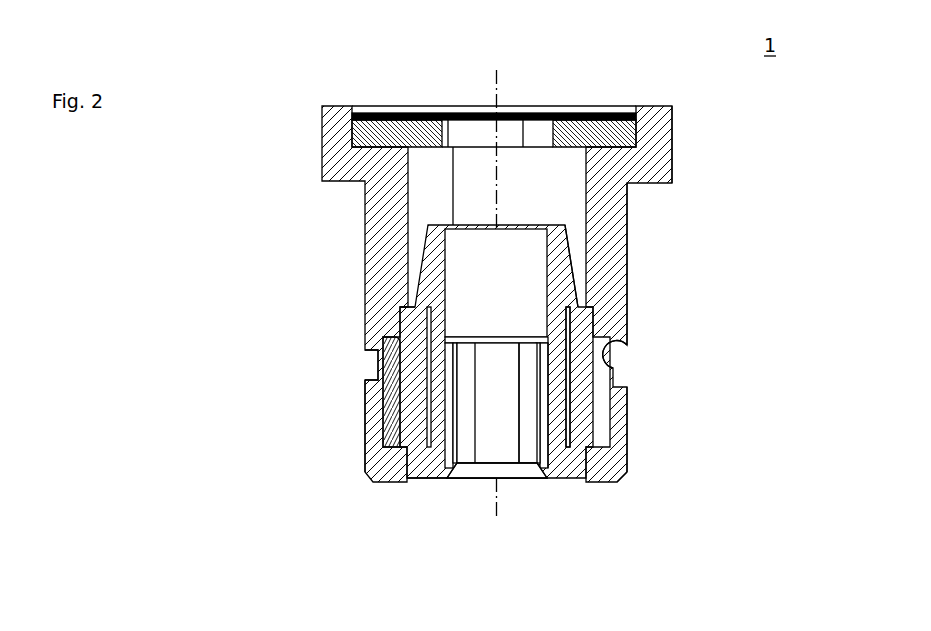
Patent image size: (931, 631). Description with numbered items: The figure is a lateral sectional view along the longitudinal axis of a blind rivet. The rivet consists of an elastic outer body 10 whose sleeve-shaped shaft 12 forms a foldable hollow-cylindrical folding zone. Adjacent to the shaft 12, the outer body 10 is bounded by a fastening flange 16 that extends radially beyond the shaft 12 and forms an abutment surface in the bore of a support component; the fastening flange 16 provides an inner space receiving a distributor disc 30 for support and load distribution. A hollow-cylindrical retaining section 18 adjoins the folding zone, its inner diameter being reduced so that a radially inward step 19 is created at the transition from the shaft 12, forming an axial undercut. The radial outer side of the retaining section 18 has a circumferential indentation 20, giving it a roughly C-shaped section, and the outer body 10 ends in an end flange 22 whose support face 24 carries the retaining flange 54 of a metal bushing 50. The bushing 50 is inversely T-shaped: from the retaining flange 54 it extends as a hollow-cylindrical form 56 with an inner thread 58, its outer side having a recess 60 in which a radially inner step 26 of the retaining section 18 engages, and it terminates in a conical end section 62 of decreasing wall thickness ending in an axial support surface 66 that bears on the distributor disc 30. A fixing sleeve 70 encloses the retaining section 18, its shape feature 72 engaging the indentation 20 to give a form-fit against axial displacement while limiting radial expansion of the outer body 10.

The outer body 10 is at (613, 308).
The sleeve-shaped shaft 12 is at (617, 213).
The fastening flange 16 is at (660, 136).
The retaining section 18 is at (618, 413).
The step 19 is at (415, 315).
The circumferential indentation 20 is at (446, 466).
The end flange 22 is at (620, 485).
The support face 24 is at (412, 447).
The radially inner step 26 is at (575, 331).
The distributor disc 30 is at (323, 152).
The metal bushing 50 is at (416, 266).
The retaining flange 54 is at (587, 473).
The hollow-cylindrical form 56 is at (557, 403).
The inner thread 58 is at (537, 397).
The recess 60 is at (370, 350).
The conical end section 62 is at (563, 259).
The axial support surface 66 is at (440, 226).
The fixing sleeve 70 is at (365, 429).
The shape feature 72 is at (610, 363).